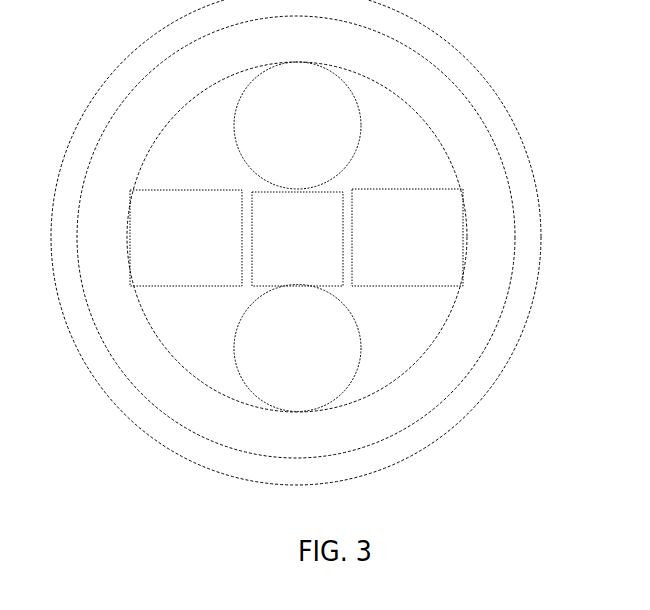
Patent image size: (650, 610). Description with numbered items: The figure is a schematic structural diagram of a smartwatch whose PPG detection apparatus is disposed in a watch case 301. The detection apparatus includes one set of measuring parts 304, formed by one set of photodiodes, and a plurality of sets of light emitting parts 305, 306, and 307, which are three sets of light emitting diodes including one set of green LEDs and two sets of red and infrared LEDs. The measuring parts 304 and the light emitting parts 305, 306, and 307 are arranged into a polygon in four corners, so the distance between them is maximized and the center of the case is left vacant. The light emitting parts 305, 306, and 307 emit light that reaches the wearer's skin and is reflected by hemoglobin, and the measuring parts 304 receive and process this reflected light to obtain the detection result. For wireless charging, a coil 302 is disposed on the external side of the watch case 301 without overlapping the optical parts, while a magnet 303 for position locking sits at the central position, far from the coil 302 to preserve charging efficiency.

The watch case 301 is at (478, 388).
The coil 302 is at (492, 150).
The magnet 303 is at (333, 197).
The measuring parts 304 is at (132, 213).
The light emitting parts 305 is at (305, 66).
The light emitting parts 306 is at (326, 393).
The light emitting parts 307 is at (445, 212).